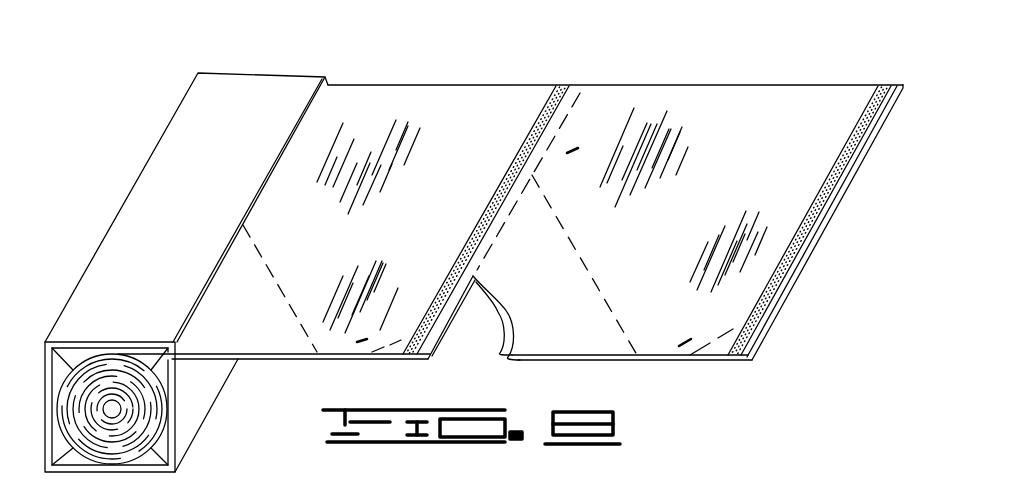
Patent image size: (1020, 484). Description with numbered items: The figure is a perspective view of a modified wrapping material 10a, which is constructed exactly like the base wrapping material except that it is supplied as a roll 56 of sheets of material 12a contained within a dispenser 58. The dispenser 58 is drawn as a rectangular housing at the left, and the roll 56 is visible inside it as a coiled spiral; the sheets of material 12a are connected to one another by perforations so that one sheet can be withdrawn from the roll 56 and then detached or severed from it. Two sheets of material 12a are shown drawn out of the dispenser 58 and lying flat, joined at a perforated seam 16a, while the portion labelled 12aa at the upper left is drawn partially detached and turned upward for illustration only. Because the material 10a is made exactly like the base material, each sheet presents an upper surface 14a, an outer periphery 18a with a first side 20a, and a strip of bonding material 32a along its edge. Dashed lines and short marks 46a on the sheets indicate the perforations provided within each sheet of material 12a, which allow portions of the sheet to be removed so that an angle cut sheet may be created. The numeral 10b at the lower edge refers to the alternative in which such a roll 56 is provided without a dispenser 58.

The modified material 10a is at (438, 70).
The second panel array assembly 10b is at (662, 483).
The first panel 12aa is at (362, 78).
The sheet of material 12a is at (680, 78).
The panel face sheet 14a is at (768, 112).
The hinge joint 16a is at (494, 306).
The outer edge member 18a is at (798, 286).
The edge strip 20a is at (818, 246).
The adhesive strip 32a is at (817, 213).
The fold line marks 46a is at (683, 342).
The roll 56 is at (112, 409).
The dispenser 58 is at (173, 172).